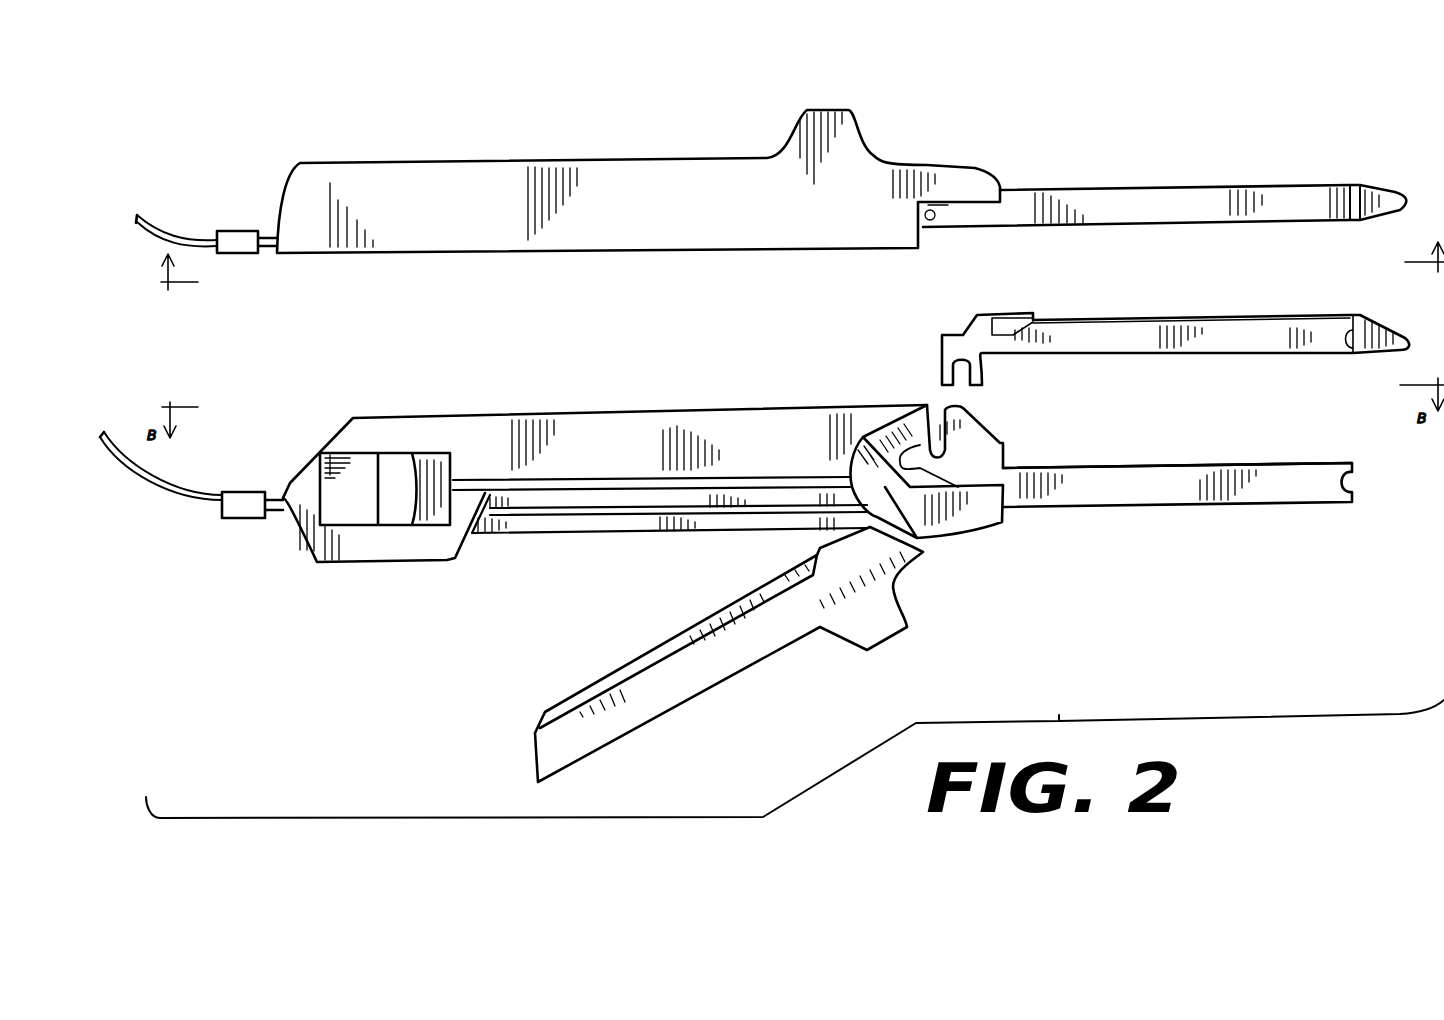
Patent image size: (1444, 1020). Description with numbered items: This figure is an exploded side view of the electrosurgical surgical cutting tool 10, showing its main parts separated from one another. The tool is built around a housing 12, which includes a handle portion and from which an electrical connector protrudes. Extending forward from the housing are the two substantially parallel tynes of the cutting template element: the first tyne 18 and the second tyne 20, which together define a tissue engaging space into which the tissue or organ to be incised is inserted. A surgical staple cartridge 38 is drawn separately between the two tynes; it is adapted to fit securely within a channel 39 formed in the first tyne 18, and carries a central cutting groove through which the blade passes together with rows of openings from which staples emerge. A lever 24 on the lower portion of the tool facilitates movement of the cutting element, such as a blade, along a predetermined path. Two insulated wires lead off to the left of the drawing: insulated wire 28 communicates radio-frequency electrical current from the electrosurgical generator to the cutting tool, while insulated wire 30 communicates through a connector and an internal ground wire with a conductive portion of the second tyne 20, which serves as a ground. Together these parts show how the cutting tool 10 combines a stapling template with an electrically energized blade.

The surgical cutting tool 10 is at (440, 135).
The housing 12 is at (600, 155).
The second tyne 20 is at (1133, 200).
The insulated wire 30 is at (160, 225).
The surgical staple cartridge 38 is at (1113, 340).
The insulated wire 28 is at (168, 490).
The lever 24 is at (393, 507).
The channel 39 is at (1217, 463).
The first tyne 18 is at (1182, 487).